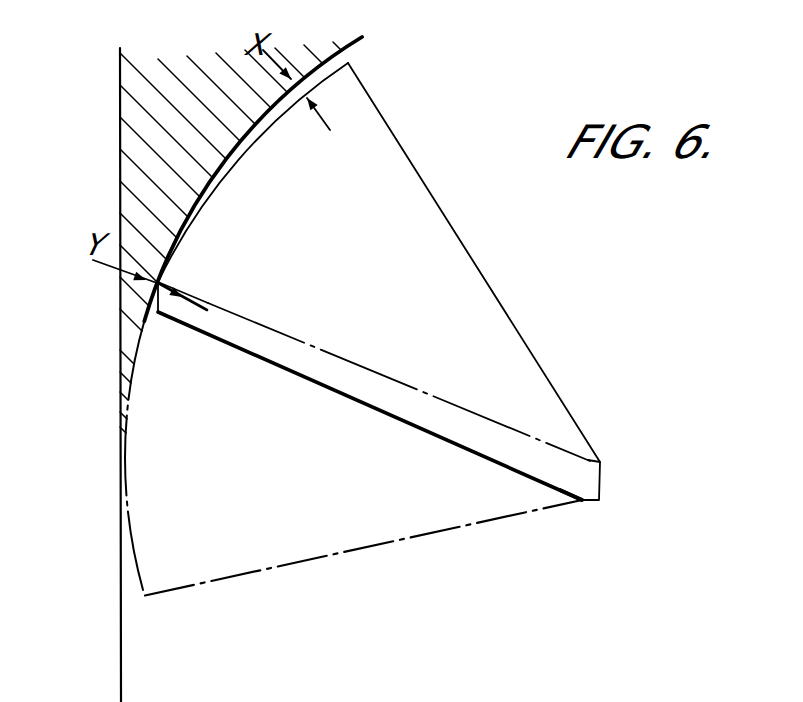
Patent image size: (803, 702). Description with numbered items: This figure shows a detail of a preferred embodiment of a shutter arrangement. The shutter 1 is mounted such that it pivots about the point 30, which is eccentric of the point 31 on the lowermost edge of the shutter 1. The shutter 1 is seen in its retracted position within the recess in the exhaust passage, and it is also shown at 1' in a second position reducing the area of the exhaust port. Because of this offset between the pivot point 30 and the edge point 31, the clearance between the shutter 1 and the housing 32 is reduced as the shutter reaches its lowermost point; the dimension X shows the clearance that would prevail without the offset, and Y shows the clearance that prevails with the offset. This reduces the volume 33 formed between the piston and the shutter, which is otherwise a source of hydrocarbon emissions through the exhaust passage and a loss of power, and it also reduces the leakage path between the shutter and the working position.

The shutter 1 is at (379, 281).
The shutter in second position 1' is at (363, 522).
The pivot point 30 is at (595, 476).
The point on lowermost edge of shutter 31 is at (581, 501).
The housing 32 is at (133, 148).
The volume 33 is at (122, 332).